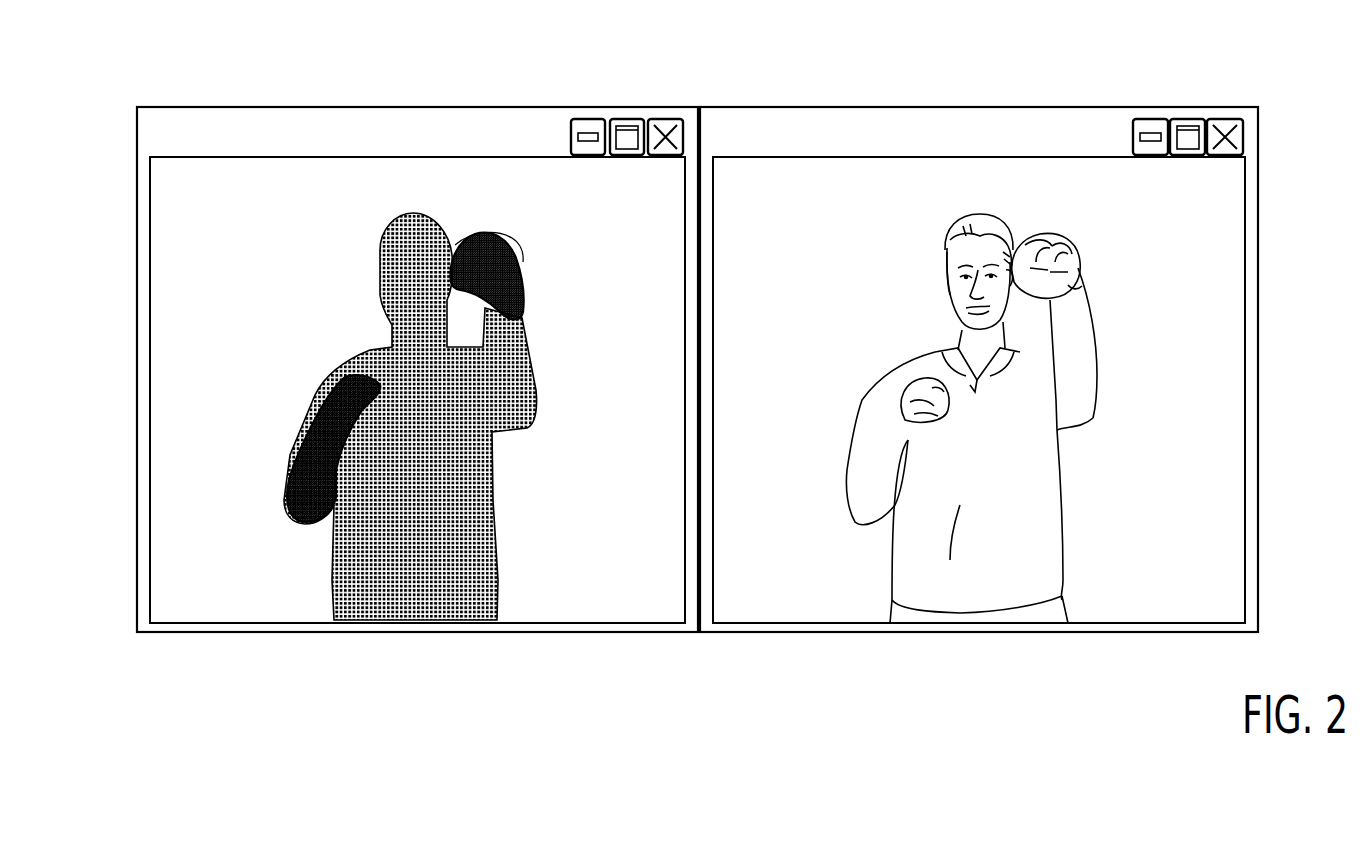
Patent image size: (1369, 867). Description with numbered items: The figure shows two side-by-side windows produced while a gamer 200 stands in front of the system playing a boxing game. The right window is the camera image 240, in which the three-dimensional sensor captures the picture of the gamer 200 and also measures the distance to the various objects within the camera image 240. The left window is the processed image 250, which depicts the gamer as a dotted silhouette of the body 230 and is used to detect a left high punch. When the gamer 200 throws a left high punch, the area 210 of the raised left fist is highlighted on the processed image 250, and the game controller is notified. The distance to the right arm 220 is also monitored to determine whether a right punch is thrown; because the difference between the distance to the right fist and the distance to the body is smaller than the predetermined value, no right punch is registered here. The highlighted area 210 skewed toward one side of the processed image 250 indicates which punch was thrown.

The gamer 200 is at (1045, 515).
The highlighted area 210 is at (497, 262).
The right arm 220 is at (315, 431).
The user silhouette 230 is at (483, 493).
The camera image 240 is at (997, 117).
The processed image 250 is at (430, 117).